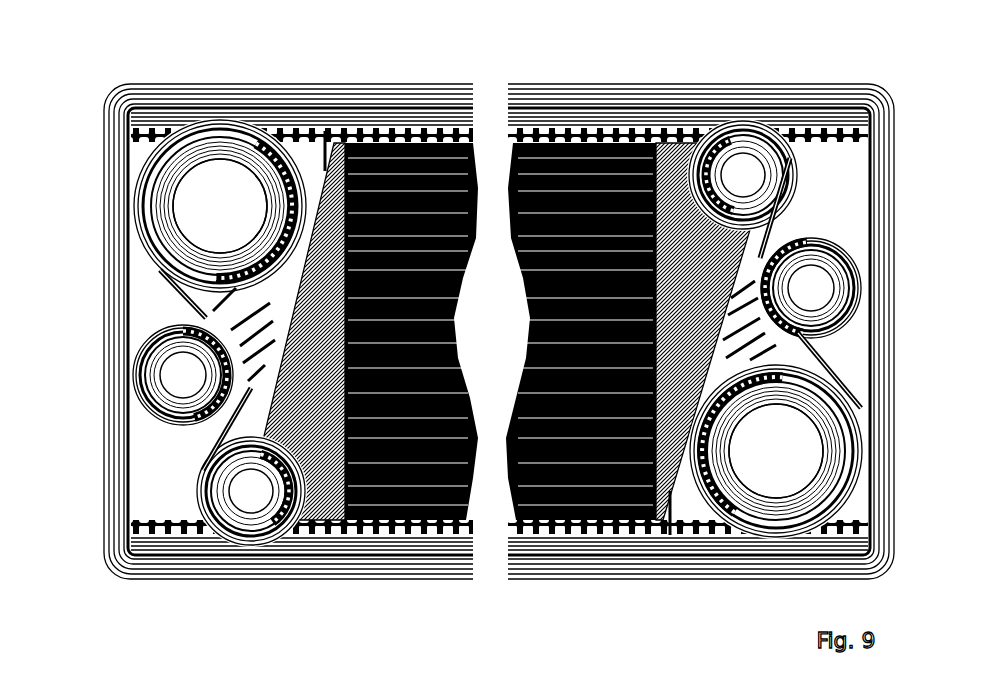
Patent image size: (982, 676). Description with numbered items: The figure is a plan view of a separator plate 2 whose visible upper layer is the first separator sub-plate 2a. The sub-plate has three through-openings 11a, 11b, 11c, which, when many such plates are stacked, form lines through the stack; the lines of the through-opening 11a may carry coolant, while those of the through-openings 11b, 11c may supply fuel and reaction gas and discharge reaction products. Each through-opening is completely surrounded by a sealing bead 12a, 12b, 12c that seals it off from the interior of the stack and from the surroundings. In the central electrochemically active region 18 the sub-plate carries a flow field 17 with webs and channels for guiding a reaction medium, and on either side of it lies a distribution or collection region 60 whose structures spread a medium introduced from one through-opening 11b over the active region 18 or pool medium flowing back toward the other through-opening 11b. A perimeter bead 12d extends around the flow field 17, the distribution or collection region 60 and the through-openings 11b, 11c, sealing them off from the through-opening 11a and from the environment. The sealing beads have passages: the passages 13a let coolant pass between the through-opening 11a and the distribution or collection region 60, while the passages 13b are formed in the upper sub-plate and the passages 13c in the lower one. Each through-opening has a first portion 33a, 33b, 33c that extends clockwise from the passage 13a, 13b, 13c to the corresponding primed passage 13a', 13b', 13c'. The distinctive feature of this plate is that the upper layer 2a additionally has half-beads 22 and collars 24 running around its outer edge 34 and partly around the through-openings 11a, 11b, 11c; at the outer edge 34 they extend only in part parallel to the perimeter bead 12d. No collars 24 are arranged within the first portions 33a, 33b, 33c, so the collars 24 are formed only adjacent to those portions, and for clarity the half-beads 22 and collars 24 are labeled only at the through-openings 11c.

The separator plate 2 is at (499, 329).
The first separator sub-plate 2a is at (499, 331).
The through-opening 11a is at (497, 331).
The through-opening 11b is at (497, 333).
The through-opening 11c is at (498, 328).
The sealing bead 12a is at (165, 412).
The sealing bead 12b is at (225, 528).
The sealing bead 12c is at (150, 140).
The perimeter bead 12d is at (585, 118).
The passage 13a is at (498, 331).
The passage 13a' is at (502, 329).
The passage 13b is at (500, 316).
The passage 13b' is at (500, 333).
The passage 13c is at (498, 332).
The passage 13c' is at (503, 337).
The flow field 17 is at (500, 331).
The electrochemically active region 18 is at (500, 331).
The half-bead 22 is at (348, 100).
The collar 24 is at (385, 100).
The first portion 33a is at (157, 357).
The first portion 33b is at (300, 545).
The first portion 33c is at (165, 238).
The outer edge 34 is at (103, 568).
The distribution or collection region 60 is at (510, 331).